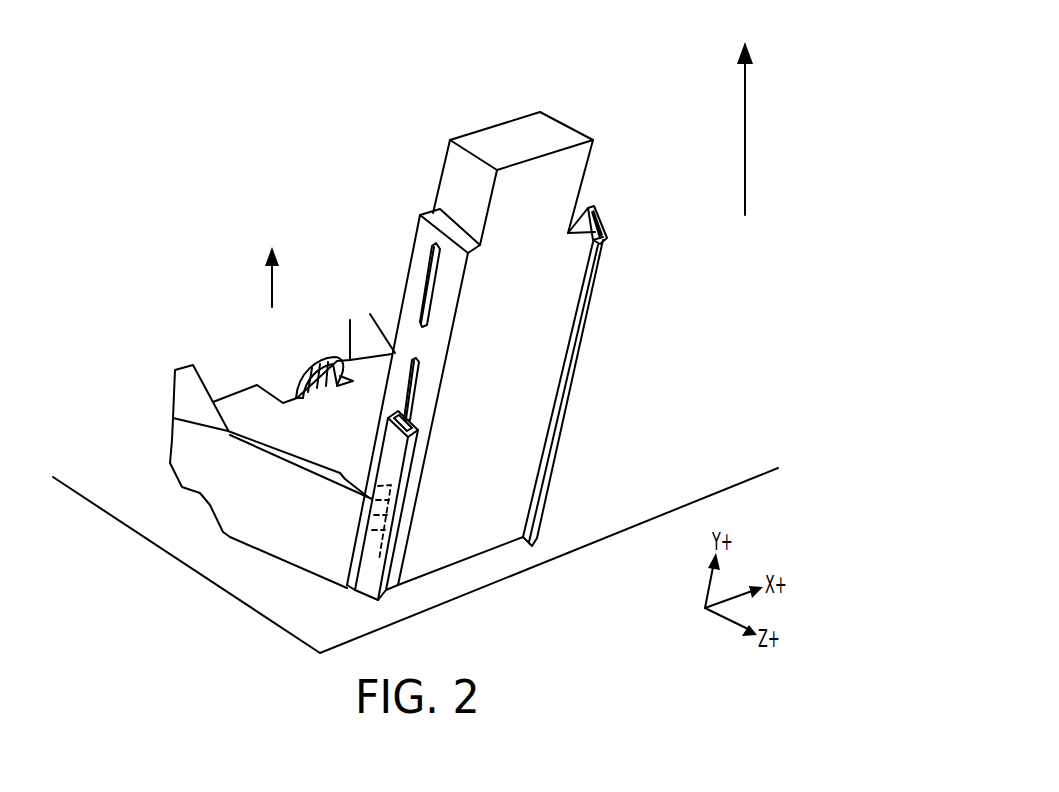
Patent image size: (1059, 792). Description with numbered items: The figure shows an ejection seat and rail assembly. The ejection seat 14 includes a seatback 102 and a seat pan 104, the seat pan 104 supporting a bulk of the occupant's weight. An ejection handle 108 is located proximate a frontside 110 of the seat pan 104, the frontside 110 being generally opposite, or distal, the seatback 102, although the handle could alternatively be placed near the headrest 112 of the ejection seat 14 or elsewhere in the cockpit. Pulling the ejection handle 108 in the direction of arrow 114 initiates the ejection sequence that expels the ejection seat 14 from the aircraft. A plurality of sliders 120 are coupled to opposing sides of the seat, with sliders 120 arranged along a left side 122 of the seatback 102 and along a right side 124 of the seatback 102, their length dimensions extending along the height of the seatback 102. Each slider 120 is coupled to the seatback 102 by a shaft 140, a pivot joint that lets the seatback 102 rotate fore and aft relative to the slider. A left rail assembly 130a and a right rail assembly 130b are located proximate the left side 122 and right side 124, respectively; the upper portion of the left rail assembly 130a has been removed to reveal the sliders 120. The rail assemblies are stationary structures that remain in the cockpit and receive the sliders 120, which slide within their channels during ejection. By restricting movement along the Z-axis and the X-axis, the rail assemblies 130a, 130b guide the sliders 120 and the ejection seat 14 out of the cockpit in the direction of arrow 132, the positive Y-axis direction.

The ejection seat 14 is at (645, 130).
The seatback 102 is at (524, 338).
The seat pan 104 is at (349, 438).
The ejection handle 108 is at (327, 359).
The frontside 110 is at (241, 391).
The headrest 112 is at (557, 128).
The arrow 114 is at (273, 290).
The sliders 120 is at (428, 283).
The left side 122 is at (415, 337).
The right side 124 is at (565, 363).
The left rail assembly 130a is at (398, 447).
The right rail assembly 130b is at (597, 270).
The arrow 132 is at (746, 142).
The shaft 140 is at (612, 489).